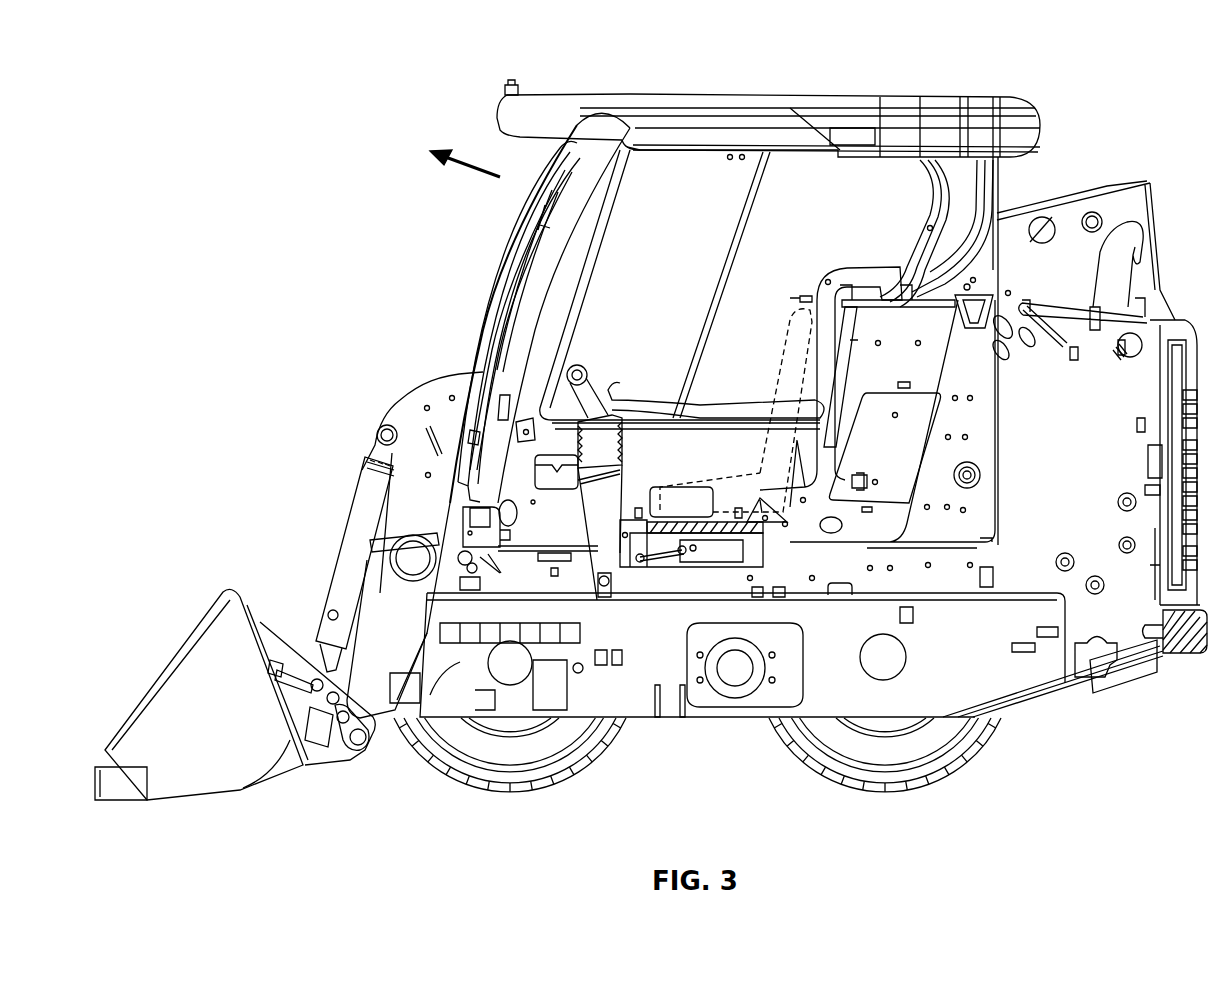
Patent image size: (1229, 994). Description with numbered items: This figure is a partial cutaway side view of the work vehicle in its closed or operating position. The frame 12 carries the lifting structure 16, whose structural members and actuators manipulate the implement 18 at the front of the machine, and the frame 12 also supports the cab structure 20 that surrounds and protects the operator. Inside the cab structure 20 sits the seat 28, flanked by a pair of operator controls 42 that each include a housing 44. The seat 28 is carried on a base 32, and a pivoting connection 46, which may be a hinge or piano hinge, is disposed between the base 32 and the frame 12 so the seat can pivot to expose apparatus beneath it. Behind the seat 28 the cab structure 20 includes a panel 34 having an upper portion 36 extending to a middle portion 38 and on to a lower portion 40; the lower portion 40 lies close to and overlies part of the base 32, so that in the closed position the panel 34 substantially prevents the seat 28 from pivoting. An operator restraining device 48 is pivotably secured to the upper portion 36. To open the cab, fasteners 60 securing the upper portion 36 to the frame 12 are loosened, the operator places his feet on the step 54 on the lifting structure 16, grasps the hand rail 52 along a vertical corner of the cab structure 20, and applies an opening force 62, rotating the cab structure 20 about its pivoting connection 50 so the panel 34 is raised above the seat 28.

The frame 12 is at (630, 687).
The lifting structure 16 is at (407, 373).
The implement 18 is at (204, 724).
The cab structure 20 is at (800, 97).
The seat 28 is at (782, 356).
The base 32 is at (777, 527).
The panel 34 is at (800, 477).
The upper portion 36 is at (880, 309).
The middle portion 38 is at (840, 358).
The lower portion 40 is at (790, 512).
The operator controls 42 is at (597, 383).
The housing 44 is at (588, 514).
The pivoting connection 46 is at (621, 533).
The operator restraining device 48 is at (847, 264).
The pivoting connection 50 is at (460, 533).
The hand rail 52 is at (503, 236).
The step 54 is at (392, 537).
The fasteners 60 is at (965, 285).
The opening force 62 is at (465, 162).